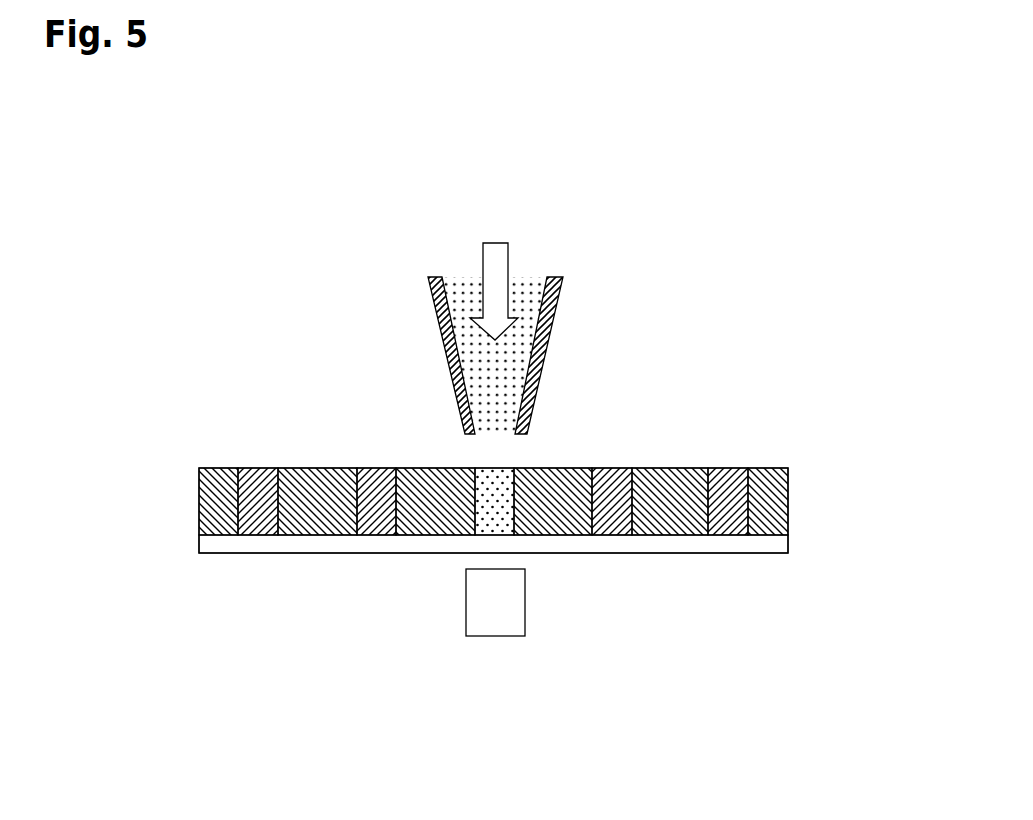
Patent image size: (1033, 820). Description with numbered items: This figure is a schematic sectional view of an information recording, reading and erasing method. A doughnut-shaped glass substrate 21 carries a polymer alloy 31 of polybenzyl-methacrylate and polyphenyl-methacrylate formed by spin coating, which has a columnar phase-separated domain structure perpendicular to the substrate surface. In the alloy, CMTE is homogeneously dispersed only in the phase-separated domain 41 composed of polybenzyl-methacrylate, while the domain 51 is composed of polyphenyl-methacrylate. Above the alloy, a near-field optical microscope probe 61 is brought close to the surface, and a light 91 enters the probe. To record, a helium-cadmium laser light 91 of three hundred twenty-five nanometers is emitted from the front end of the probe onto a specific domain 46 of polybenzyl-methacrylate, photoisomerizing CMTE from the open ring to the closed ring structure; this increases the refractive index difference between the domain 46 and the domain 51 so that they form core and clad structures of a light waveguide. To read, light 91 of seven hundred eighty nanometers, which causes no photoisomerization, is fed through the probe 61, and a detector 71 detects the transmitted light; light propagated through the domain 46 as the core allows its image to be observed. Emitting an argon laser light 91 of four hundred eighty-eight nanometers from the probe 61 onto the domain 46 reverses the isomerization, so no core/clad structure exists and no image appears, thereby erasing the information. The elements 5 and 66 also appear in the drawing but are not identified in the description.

The laminated body 5 is at (430, 474).
The glass substrate 21 is at (700, 543).
The polymer alloy 31 is at (795, 505).
The phase-separated domain 41 is at (258, 473).
The domain 46 is at (500, 500).
The domain 51 is at (199, 488).
The near-field optical microscope probe 61 is at (500, 370).
The nozzle 66 is at (437, 300).
The detector 71 is at (503, 627).
The light 91 is at (498, 257).